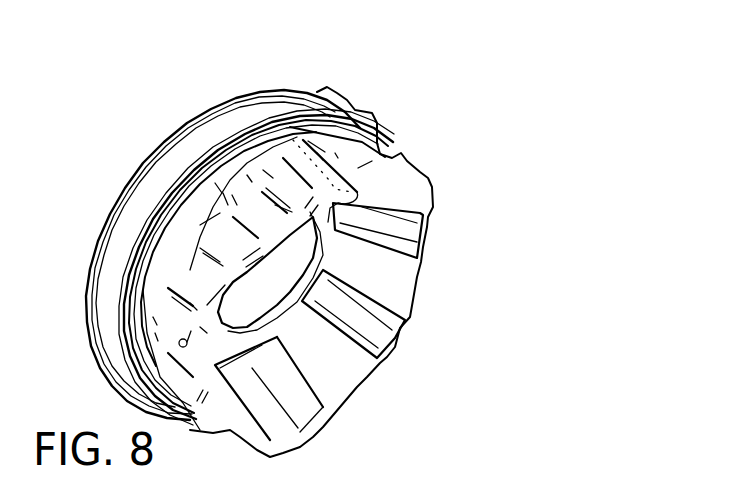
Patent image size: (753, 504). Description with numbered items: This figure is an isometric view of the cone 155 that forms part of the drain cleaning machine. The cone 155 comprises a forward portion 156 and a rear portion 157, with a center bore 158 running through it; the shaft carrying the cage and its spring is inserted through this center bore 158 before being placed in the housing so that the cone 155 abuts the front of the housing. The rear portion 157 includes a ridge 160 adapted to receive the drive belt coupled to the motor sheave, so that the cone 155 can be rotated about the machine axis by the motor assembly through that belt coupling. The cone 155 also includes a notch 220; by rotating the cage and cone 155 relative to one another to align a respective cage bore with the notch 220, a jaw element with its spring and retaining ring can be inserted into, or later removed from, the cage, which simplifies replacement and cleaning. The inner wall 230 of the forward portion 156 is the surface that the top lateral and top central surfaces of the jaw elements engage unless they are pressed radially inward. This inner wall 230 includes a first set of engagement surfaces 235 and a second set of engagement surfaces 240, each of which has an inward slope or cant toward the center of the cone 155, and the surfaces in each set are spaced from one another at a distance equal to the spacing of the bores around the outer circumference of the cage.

The cone 155 is at (447, 55).
The forward portion 156 is at (458, 163).
The rear portion 157 is at (378, 90).
The center bore 158 is at (287, 310).
The ridge 160 is at (270, 108).
The notch 220 is at (376, 186).
The inner wall 230 is at (332, 375).
The first set of engagement surfaces 235 is at (424, 218).
The second set of engagement surfaces 240 is at (387, 335).